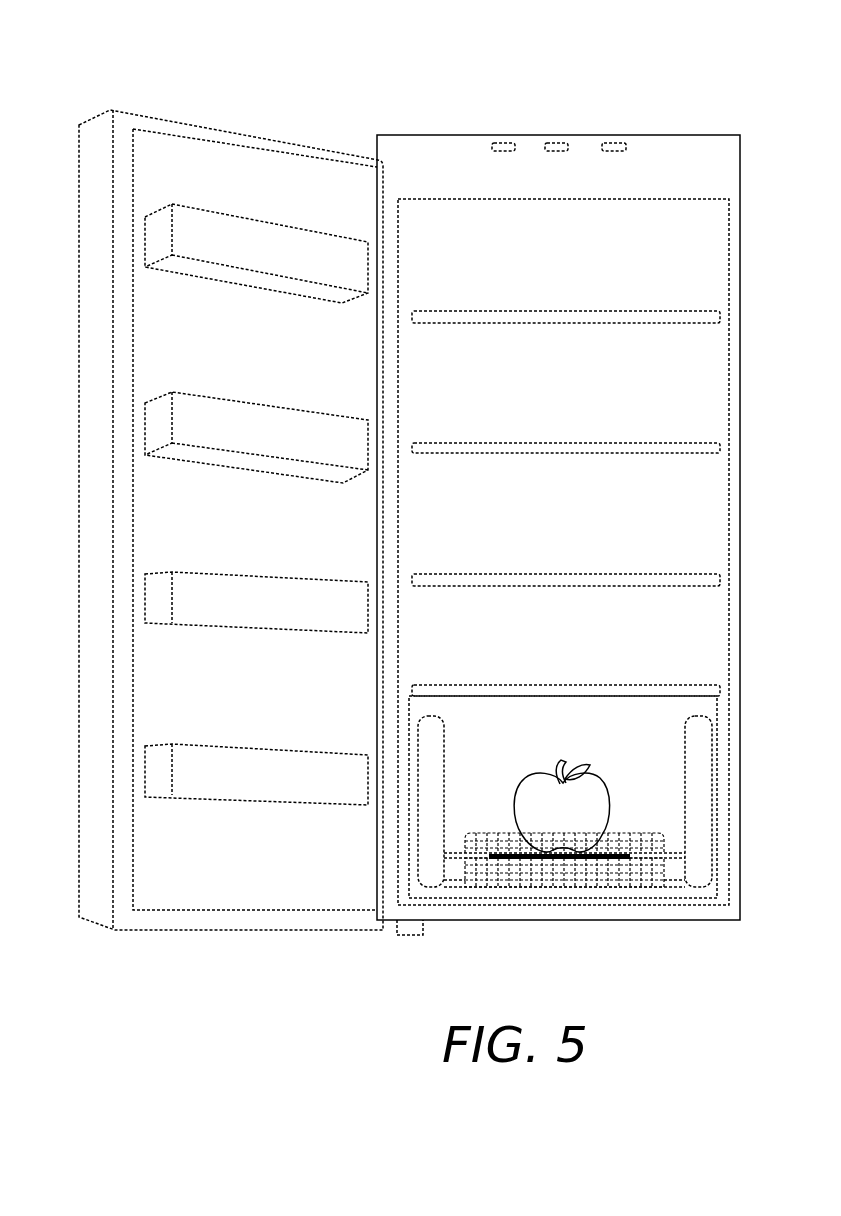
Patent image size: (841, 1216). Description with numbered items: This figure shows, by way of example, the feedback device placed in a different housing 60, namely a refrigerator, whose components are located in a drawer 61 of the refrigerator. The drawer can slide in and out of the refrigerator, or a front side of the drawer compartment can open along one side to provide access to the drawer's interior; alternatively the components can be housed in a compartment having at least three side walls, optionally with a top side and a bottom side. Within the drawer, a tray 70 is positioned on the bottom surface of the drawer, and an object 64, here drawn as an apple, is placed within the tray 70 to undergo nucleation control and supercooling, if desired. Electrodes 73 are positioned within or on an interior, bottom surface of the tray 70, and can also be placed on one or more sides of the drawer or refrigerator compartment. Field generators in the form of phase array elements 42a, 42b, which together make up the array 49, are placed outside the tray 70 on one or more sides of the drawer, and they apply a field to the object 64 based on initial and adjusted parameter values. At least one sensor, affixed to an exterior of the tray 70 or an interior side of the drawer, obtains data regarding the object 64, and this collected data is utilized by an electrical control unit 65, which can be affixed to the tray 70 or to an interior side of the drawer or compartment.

The housing 60 is at (578, 108).
The storage drawer 61 is at (712, 751).
The electrical control unit 65 is at (444, 741).
The object 64 is at (607, 788).
The phase array element 42a is at (500, 842).
The phase array element 42b is at (622, 887).
The array 49 is at (577, 887).
The tray 70 is at (672, 870).
The electrodes 73 is at (526, 860).